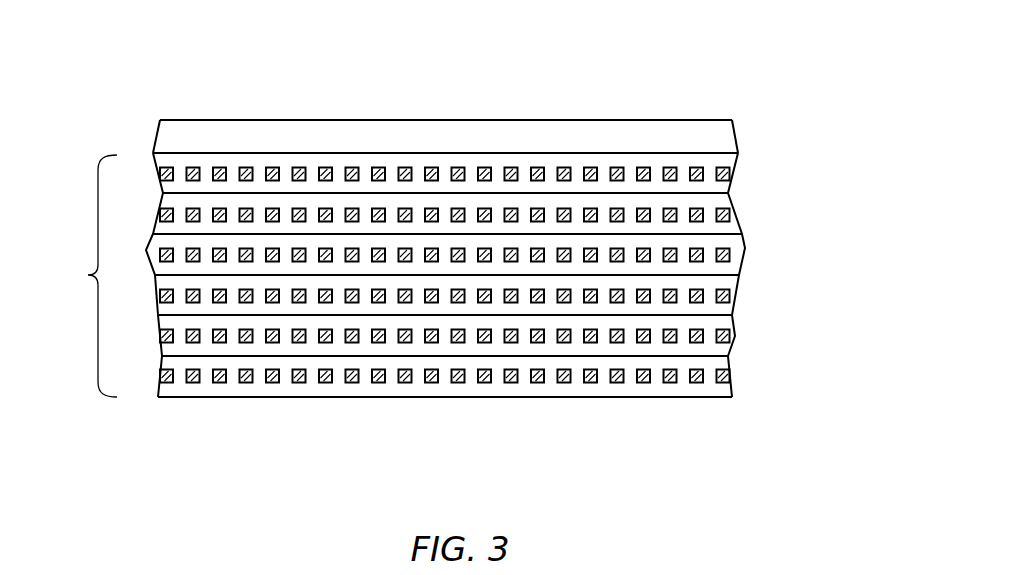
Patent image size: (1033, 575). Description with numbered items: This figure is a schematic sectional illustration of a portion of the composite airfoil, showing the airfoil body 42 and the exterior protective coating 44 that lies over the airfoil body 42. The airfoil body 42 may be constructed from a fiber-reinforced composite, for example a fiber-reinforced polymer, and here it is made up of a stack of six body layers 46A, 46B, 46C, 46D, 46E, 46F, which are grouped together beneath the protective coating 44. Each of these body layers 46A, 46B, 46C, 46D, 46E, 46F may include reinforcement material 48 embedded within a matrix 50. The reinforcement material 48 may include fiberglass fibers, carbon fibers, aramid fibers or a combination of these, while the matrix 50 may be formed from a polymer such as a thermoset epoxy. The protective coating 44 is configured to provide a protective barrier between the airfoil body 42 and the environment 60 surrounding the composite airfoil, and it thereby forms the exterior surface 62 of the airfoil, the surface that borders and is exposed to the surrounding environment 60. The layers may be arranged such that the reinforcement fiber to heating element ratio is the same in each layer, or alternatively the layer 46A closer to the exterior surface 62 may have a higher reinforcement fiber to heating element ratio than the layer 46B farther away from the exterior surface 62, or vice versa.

The environment 60 is at (408, 48).
The exterior surface 62 is at (281, 120).
The protective coating 44 is at (138, 134).
The airfoil body 42 is at (86, 276).
The layer 46A is at (755, 171).
The layer 46B is at (757, 210).
The layer 46C is at (772, 255).
The layer 46D is at (755, 297).
The layer 46E is at (765, 337).
The layer 46F is at (752, 377).
The reinforcement material 48 is at (617, 208).
The matrix 50 is at (670, 203).